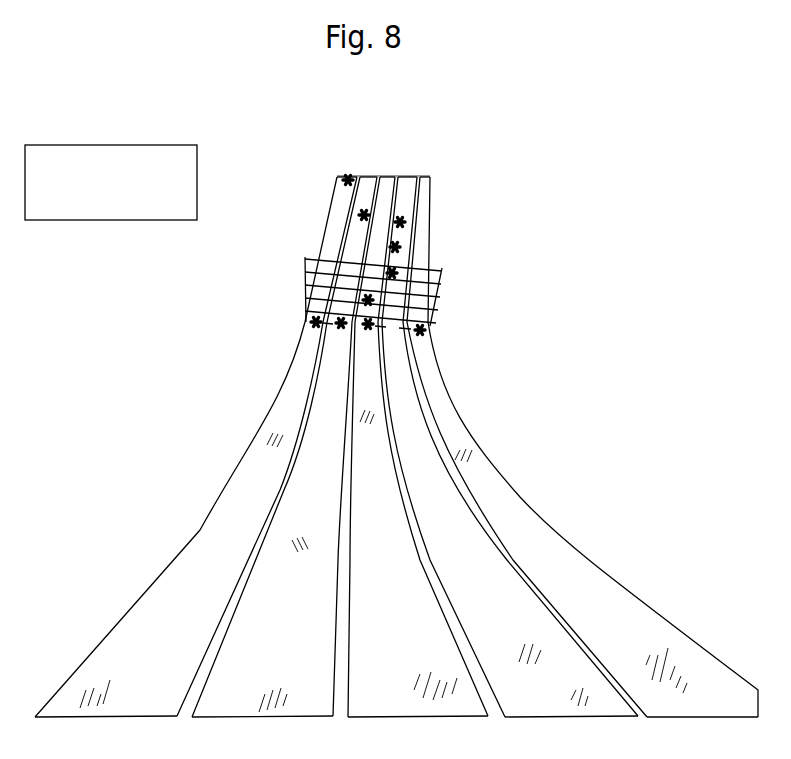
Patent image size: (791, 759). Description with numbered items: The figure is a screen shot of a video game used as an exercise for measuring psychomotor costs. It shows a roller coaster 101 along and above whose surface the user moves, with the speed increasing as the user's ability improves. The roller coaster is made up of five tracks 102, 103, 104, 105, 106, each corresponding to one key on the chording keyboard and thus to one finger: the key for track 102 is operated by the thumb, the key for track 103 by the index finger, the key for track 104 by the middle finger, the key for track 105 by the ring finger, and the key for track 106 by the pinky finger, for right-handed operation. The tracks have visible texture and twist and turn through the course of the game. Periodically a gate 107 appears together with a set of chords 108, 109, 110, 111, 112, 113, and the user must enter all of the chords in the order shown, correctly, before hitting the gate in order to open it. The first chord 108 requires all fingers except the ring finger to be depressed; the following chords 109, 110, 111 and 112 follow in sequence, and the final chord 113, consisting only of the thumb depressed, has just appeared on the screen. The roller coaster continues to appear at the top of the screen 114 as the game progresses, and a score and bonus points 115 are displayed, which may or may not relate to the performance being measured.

The roller coaster 101 is at (106, 318).
The track 102 is at (205, 570).
The track 103 is at (303, 517).
The track 104 is at (363, 482).
The track 105 is at (413, 465).
The track 106 is at (445, 433).
The gate 107 is at (305, 259).
The first chord 108 is at (428, 333).
The chord 109 is at (372, 300).
The chord 110 is at (393, 278).
The chord 111 is at (402, 247).
The chord 112 is at (408, 223).
The chord 113 is at (353, 183).
The top of the screen 114 is at (387, 177).
The score and bonus points 115 is at (183, 165).